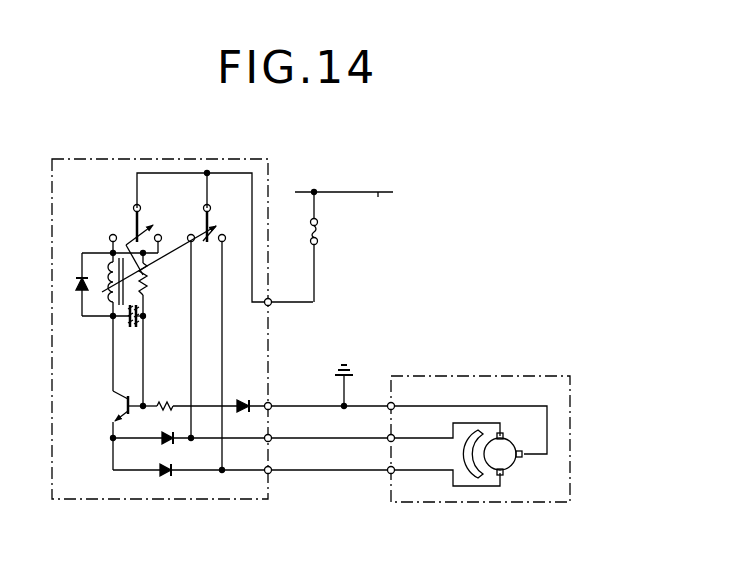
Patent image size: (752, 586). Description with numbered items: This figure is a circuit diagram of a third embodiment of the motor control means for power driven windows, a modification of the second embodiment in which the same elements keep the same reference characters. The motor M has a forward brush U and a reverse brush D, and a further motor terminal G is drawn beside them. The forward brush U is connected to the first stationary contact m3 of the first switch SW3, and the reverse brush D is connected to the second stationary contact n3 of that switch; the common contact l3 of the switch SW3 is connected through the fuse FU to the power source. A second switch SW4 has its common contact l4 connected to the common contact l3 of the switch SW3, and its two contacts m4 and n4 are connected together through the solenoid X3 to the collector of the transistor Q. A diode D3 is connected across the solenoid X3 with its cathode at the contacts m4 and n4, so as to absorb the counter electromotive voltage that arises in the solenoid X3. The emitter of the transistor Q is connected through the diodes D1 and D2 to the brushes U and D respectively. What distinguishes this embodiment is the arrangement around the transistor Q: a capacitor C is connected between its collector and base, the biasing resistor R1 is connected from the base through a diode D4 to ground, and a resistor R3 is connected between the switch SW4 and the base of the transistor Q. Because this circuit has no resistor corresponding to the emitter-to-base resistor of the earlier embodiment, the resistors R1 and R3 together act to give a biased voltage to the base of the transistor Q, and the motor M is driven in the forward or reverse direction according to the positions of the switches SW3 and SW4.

The switch SW4 is at (109, 202).
The first switch SW3 is at (172, 200).
The common contact l4 is at (142, 236).
The contact m4 is at (161, 235).
The contact n4 is at (102, 238).
The common contact l3 is at (166, 244).
The first stationary contact m3 is at (224, 241).
The second stationary contact n3 is at (193, 243).
The solenoid X3 is at (103, 284).
The diode D3 is at (76, 294).
The resistor R3 is at (147, 300).
The capacitor C is at (131, 328).
The transistor Q is at (118, 407).
The biasing resistor R1 is at (182, 395).
The diode D4 is at (309, 396).
The diode D2 is at (168, 444).
The diode D1 is at (168, 476).
The motor M is at (479, 423).
The reverse brush D is at (504, 434).
The motor terminal G is at (522, 457).
The forward brush U is at (504, 477).
The fuse FU is at (318, 238).